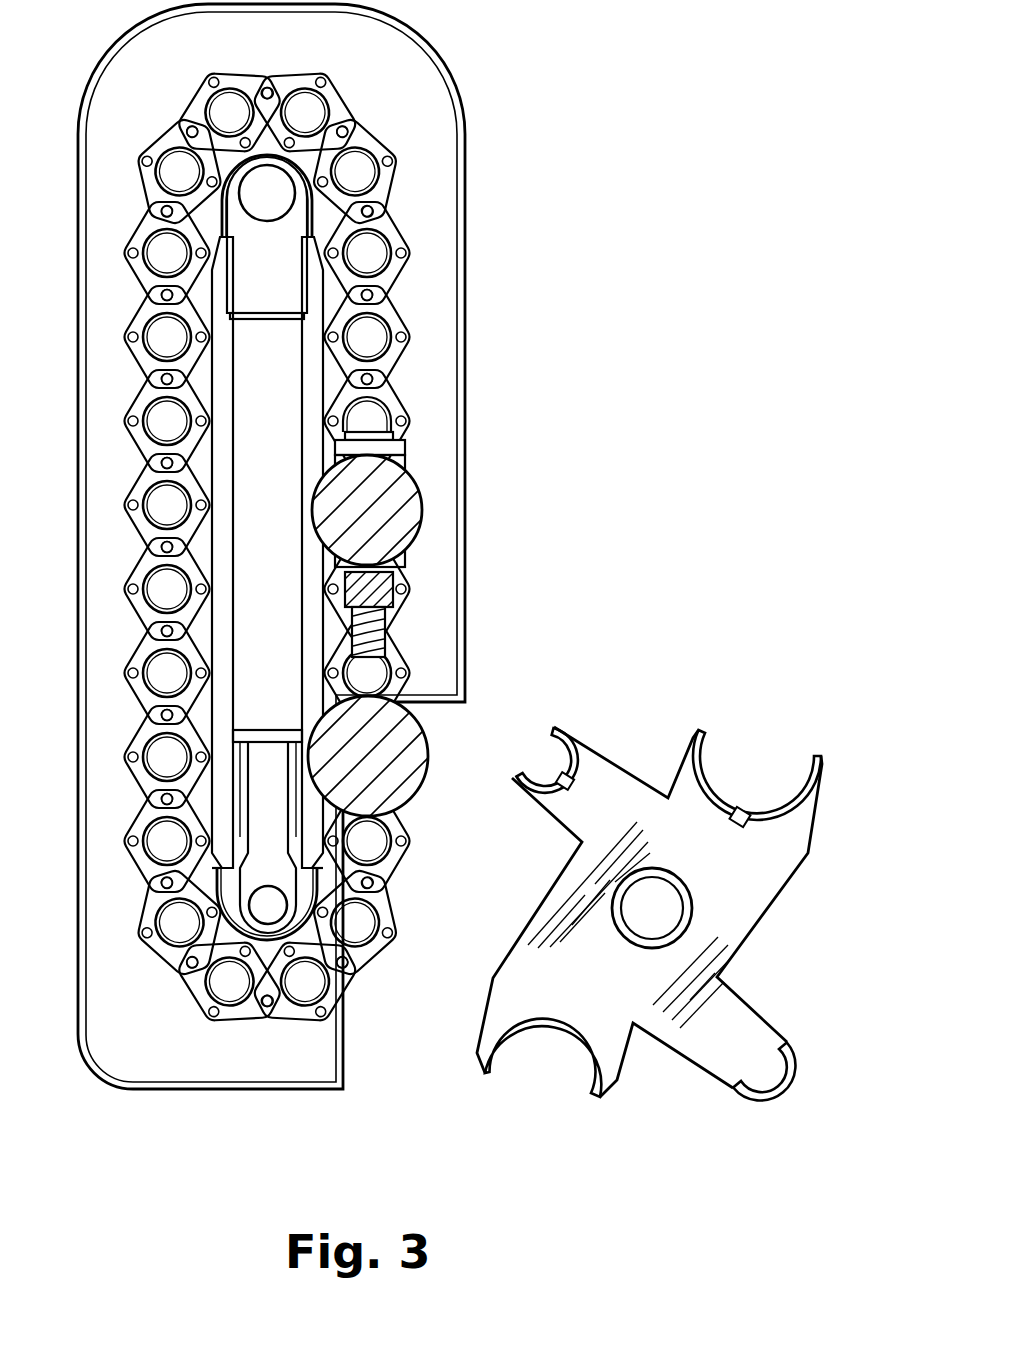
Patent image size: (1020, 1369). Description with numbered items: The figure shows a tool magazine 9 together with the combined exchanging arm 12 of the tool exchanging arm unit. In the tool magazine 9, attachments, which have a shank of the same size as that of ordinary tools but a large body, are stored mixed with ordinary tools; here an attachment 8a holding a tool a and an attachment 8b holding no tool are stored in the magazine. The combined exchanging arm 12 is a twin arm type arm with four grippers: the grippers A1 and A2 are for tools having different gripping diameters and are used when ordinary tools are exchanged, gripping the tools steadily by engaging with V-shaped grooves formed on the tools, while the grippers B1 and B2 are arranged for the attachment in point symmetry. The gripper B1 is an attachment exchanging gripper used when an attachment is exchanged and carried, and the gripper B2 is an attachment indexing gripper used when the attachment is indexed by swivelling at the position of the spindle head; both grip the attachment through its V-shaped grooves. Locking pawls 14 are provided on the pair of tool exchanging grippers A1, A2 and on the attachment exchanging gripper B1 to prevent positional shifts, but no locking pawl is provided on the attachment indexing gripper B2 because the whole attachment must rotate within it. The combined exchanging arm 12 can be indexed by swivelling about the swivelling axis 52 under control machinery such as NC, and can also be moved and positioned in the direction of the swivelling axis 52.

The tool magazine 9 is at (476, 213).
The attachment 8a is at (422, 504).
The tool a is at (382, 618).
The attachment 8b is at (430, 733).
The combined exchanging arm 12 is at (753, 884).
The locking pawl 14 is at (570, 778).
The swivelling axis 52 is at (687, 936).
The gripper A1 is at (569, 725).
The attachment exchanging gripper B1 is at (708, 730).
The gripper A2 is at (739, 1092).
The attachment indexing gripper B2 is at (478, 1070).